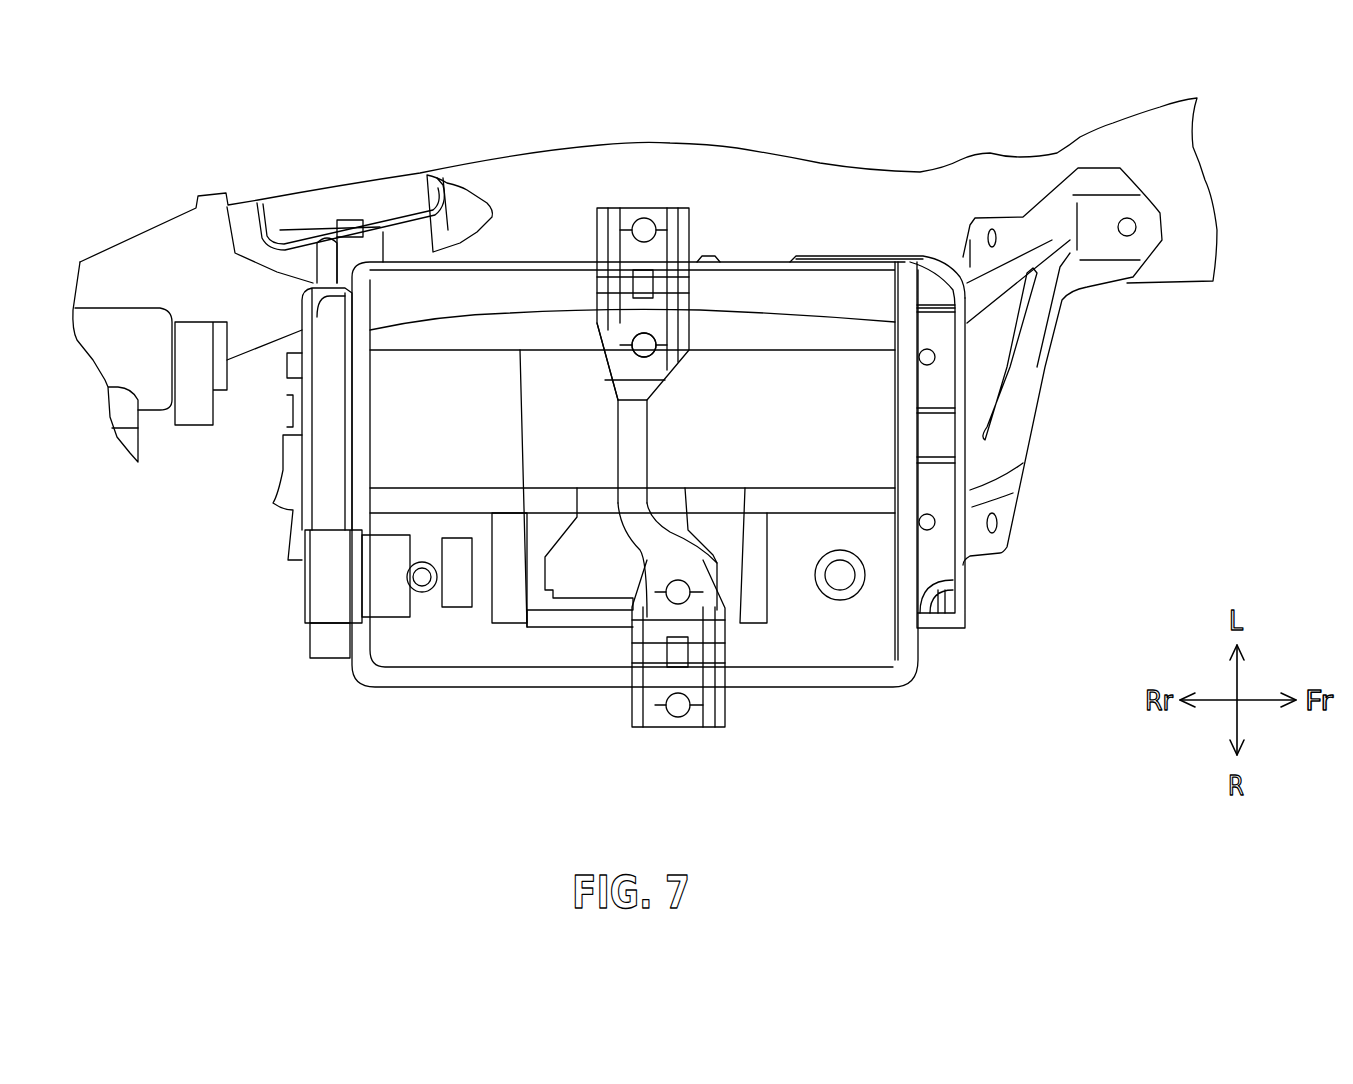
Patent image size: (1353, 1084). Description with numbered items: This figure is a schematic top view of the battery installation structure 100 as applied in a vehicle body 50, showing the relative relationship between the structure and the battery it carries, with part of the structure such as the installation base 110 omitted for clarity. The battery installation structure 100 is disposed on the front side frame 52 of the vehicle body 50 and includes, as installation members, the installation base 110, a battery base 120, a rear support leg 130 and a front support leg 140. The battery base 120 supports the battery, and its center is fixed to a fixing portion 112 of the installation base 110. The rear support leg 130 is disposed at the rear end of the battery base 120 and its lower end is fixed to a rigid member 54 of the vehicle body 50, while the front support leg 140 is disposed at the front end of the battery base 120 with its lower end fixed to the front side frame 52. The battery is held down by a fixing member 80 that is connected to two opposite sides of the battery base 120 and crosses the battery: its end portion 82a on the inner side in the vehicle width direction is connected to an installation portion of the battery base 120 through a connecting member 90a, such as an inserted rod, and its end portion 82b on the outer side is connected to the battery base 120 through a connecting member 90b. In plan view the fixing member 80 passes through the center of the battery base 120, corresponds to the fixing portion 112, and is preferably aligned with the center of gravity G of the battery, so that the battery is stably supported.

The vehicle body 50 is at (190, 181).
The front side frame 52 is at (167, 247).
The rigid member 54 is at (288, 228).
The rear support leg 130 is at (355, 250).
The fixing member 80 is at (612, 358).
The end portion 82b is at (628, 205).
The connecting member 90b is at (645, 228).
The fixing portion 112 is at (655, 340).
The installation base 110 is at (644, 345).
The battery installation structure 100 is at (867, 240).
The front support leg 140 is at (1042, 388).
The battery base 120 is at (942, 540).
The end portion 82a is at (732, 706).
The connecting member 90a is at (680, 707).
The center of gravity G is at (630, 451).